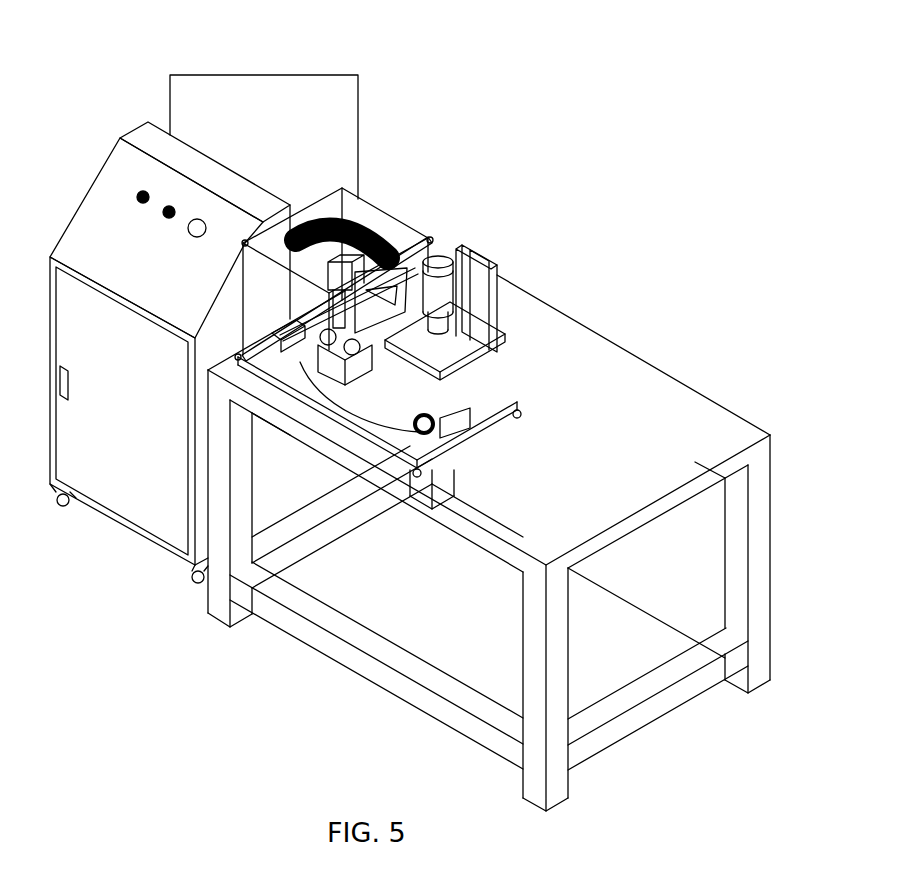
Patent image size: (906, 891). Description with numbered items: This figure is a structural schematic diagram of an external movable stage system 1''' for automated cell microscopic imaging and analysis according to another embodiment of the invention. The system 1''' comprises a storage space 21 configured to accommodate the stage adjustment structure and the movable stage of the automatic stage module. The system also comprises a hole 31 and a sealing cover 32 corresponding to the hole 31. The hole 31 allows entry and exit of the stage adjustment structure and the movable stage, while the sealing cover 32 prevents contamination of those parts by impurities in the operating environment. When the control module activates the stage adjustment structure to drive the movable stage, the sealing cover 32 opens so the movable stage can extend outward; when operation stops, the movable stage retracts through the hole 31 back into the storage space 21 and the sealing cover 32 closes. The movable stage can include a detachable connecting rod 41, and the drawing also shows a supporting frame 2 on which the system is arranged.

The external movable stage system for automated cell microscopic imaging and analysi 1''' is at (204, 300).
The storage space 21 is at (364, 223).
The hole 31 is at (395, 298).
The sealing cover 32 is at (442, 268).
The detachable connecting rod 41 is at (414, 312).
The frame 2 is at (512, 343).